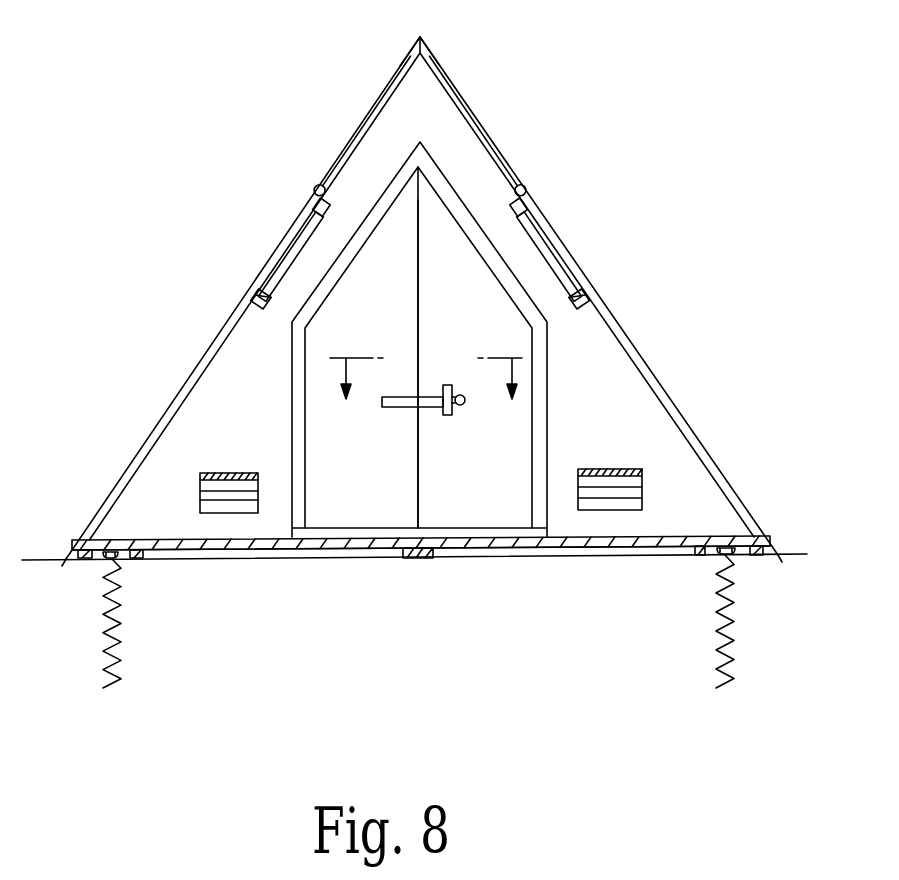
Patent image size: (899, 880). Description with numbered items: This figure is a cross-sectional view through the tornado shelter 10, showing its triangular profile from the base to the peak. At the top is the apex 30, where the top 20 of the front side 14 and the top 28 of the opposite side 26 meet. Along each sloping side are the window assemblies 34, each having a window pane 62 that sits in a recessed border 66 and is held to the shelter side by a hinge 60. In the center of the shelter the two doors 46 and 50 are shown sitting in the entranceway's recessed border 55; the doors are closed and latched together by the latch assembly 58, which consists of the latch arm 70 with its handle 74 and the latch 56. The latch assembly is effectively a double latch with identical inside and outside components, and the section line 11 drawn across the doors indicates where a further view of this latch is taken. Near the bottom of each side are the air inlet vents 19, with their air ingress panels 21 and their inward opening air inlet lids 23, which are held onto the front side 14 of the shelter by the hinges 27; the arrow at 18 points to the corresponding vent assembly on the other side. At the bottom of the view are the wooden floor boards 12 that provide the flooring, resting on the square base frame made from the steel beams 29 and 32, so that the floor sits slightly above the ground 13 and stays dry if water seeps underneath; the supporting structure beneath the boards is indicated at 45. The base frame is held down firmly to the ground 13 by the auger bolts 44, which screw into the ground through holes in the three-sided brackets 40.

The shelter 10 is at (212, 194).
The section line 11 is at (429, 394).
The floor boards 12 is at (316, 550).
The ground 13 is at (642, 557).
The side 14 is at (158, 452).
The storage compartment 18 is at (183, 393).
The air inlet vents 19 is at (588, 457).
The top 20 is at (392, 78).
The air ingress panels 21 is at (200, 506).
The air inlet lids 23 is at (200, 482).
The side 26 is at (684, 416).
The hinges 27 is at (223, 473).
The top 28 is at (444, 68).
The steel beams 29 is at (80, 559).
The apex 30 is at (421, 36).
The steel beam 32 is at (418, 556).
The window assemblies 34 is at (241, 239).
The three-sided brackets 40 is at (118, 563).
The auger bolts 44 is at (116, 668).
The floor beam 45 is at (263, 554).
The door 46 is at (476, 515).
The door 50 is at (366, 515).
The recessed border 55 is at (538, 392).
The latch 56 is at (427, 387).
The latch assembly 58 is at (403, 442).
The hinges 60 is at (317, 190).
The window panes 62 is at (297, 223).
The recessed borders 66 is at (258, 288).
The latch arm 70 is at (395, 408).
The handle 74 is at (462, 405).